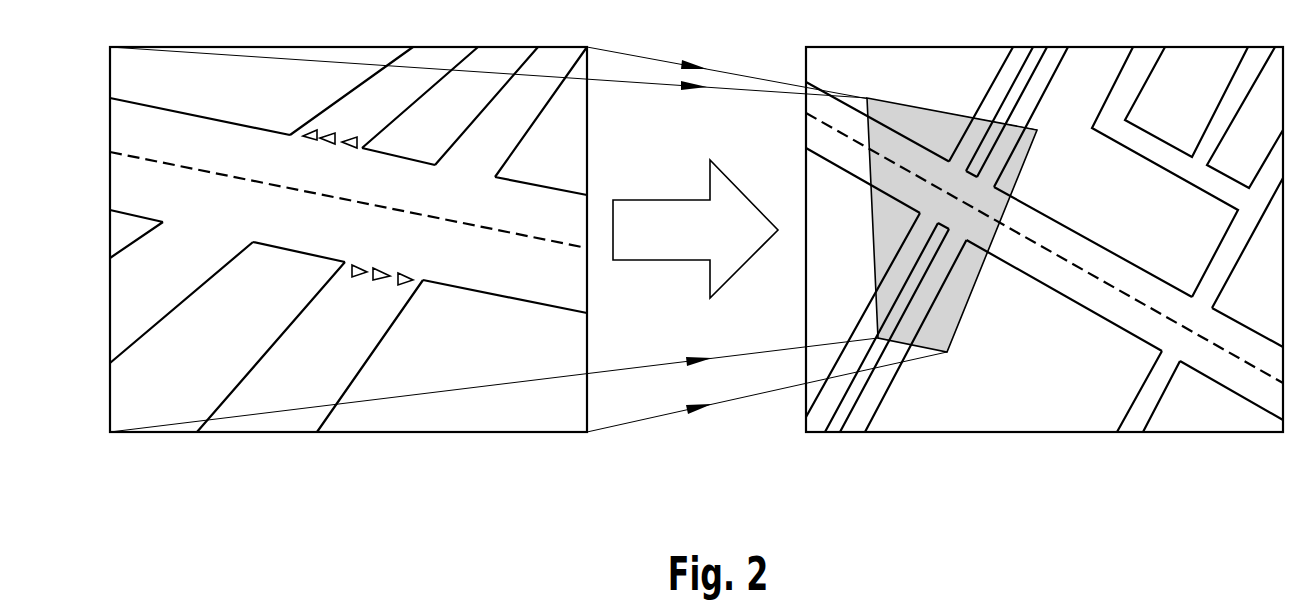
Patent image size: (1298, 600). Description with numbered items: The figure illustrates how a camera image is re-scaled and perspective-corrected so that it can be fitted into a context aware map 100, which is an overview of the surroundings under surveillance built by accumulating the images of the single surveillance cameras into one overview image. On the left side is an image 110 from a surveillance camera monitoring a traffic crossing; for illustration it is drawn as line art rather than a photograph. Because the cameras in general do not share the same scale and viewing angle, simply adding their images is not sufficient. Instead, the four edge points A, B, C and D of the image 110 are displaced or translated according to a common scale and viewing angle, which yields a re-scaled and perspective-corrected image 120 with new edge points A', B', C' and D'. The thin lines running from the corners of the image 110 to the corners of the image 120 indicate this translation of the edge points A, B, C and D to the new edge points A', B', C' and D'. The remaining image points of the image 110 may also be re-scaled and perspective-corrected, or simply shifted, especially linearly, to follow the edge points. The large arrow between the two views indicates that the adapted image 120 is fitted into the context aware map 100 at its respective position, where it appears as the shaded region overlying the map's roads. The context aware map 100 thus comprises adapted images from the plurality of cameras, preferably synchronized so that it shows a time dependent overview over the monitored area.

The context aware map 100 is at (1044, 274).
The image 110 is at (328, 246).
The re-scaled and perspective-corrected image 120 is at (1017, 175).
The edge point A is at (85, 31).
The edge point B is at (610, 31).
The edge point C is at (86, 456).
The edge point D is at (611, 456).
The new edge point A' is at (853, 75).
The new edge point B' is at (1061, 110).
The new edge point C' is at (856, 304).
The new edge point D' is at (973, 367).